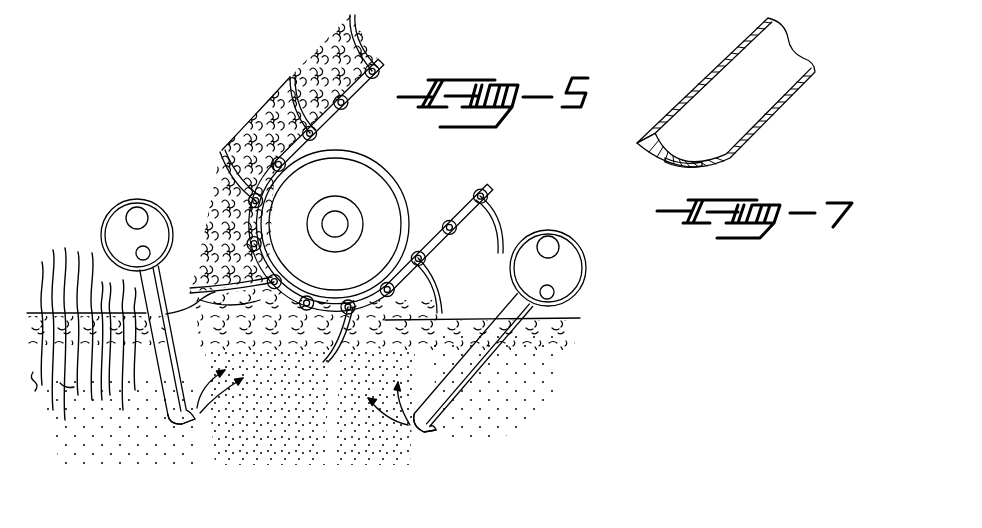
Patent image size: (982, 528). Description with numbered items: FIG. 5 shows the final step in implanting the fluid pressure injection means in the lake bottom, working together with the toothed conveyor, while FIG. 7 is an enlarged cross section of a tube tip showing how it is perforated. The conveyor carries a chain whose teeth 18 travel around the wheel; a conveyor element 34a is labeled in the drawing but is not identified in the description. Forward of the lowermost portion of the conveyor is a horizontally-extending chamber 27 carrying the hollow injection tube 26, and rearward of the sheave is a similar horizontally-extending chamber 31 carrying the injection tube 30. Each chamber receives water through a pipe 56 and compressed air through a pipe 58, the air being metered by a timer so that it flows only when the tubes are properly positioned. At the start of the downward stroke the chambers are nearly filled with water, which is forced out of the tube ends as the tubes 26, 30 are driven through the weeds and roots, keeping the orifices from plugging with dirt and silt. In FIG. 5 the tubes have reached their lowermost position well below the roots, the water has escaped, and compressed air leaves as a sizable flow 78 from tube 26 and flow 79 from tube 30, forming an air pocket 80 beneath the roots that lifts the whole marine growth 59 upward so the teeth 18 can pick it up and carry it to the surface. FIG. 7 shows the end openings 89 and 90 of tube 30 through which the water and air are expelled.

In FIG. 5, the conveyor chain 34a is at (370, 157).
In FIG. 5, the teeth 18 is at (290, 77).
In FIG. 5, the marine growths 59 is at (256, 118).
In FIG. 5, the horizontally-extending chamber 27 is at (172, 222).
In FIG. 5, the horizontally-extending chamber 31 is at (587, 272).
In FIG. 5, the air pipe 58 is at (138, 216).
In FIG. 5, the water pipe 56 is at (144, 253).
In FIG. 5, the injection tube 26 is at (165, 378).
In FIG. 5, the injection tube 30 is at (452, 397).
In FIG. 7, the injection tube 30 is at (798, 92).
In FIG. 5, the flow 78 is at (215, 428).
In FIG. 5, the flow 79 is at (383, 418).
In FIG. 5, the air pocket 80 is at (330, 377).
In FIG. 7, the end opening 89 is at (646, 135).
In FIG. 7, the end opening 90 is at (699, 165).